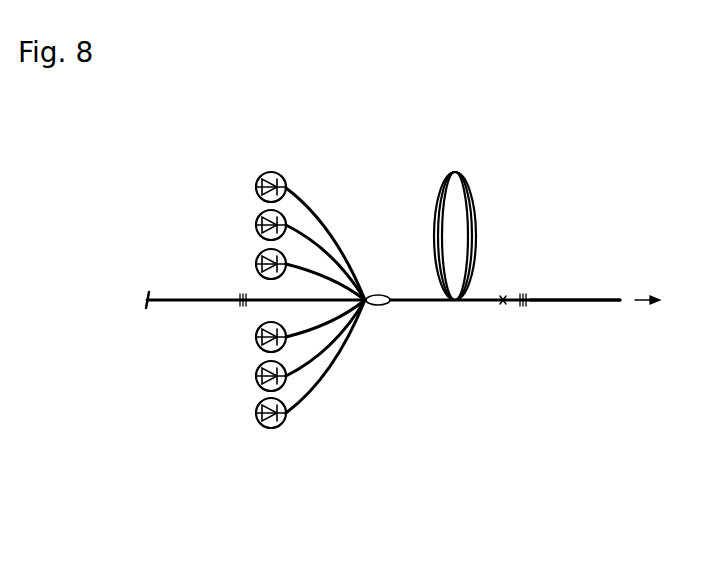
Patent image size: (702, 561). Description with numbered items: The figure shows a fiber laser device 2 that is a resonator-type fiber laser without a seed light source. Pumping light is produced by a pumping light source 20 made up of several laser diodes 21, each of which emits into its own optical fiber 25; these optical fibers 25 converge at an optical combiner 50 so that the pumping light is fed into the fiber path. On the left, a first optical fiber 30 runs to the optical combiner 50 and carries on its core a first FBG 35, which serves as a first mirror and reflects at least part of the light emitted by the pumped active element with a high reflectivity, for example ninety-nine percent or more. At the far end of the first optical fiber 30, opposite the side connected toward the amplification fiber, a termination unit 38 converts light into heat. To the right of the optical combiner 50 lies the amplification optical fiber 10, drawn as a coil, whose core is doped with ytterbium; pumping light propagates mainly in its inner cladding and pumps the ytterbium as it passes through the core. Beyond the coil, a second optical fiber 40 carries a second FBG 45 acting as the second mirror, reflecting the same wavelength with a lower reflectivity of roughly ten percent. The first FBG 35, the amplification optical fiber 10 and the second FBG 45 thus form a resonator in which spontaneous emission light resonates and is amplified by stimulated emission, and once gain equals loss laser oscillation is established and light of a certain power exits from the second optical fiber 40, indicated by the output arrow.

The fiber laser device 2 is at (609, 156).
The amplification optical fiber 10 is at (473, 300).
The pumping light source 20 is at (250, 155).
The laser diode 21 is at (256, 184).
The optical fiber 25 is at (302, 206).
The first optical fiber 30 is at (180, 300).
The first FBG 35 is at (242, 306).
The termination unit 38 is at (146, 299).
The second optical fiber 40 is at (582, 300).
The second FBG 45 is at (525, 306).
The optical combiner 50 is at (387, 304).